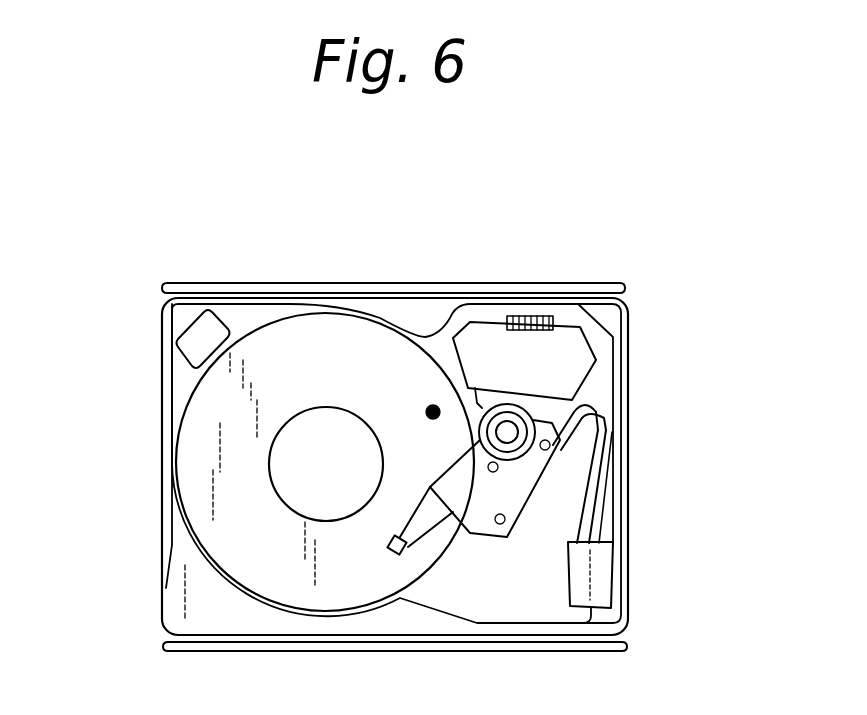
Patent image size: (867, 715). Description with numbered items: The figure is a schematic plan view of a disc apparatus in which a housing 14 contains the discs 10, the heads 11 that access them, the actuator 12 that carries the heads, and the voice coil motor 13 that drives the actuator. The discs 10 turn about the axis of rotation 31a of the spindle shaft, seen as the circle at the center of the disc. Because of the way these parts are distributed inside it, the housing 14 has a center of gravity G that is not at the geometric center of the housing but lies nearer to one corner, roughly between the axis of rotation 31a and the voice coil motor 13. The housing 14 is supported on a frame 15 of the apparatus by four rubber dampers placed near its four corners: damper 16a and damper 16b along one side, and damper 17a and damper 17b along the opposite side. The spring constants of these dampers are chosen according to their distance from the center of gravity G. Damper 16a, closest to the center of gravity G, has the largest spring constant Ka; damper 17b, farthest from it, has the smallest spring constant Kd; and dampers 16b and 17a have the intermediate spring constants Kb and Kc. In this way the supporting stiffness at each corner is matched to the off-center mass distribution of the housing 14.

The discs 10 is at (310, 600).
The heads 11 is at (392, 548).
The actuator 12 is at (557, 423).
The voice coil motor 13 is at (578, 338).
The housing 14 is at (163, 572).
The frame 15 is at (408, 650).
The damper 16a is at (602, 278).
The damper 16b is at (183, 281).
The damper 17a is at (610, 653).
The damper 17b is at (177, 655).
The axis of rotation 31a is at (333, 458).
The center of gravity G is at (418, 404).
The spring constant Ka is at (612, 251).
The spring constant Kb is at (202, 252).
The spring constant Kc is at (617, 696).
The spring constant Kd is at (210, 698).